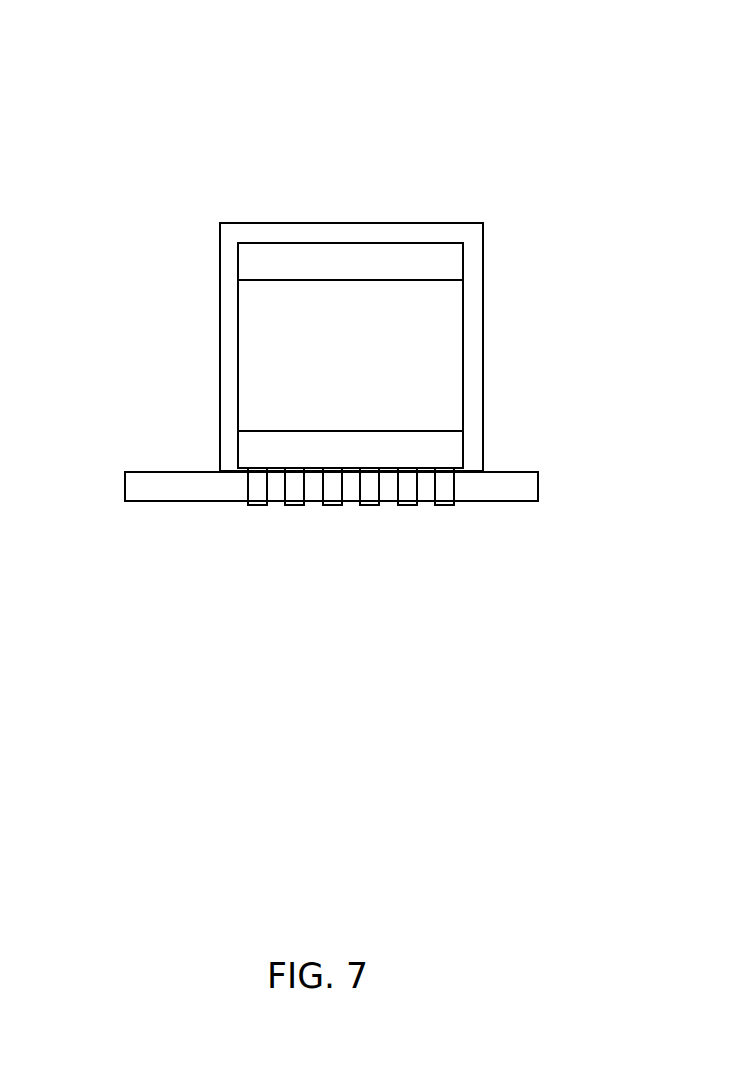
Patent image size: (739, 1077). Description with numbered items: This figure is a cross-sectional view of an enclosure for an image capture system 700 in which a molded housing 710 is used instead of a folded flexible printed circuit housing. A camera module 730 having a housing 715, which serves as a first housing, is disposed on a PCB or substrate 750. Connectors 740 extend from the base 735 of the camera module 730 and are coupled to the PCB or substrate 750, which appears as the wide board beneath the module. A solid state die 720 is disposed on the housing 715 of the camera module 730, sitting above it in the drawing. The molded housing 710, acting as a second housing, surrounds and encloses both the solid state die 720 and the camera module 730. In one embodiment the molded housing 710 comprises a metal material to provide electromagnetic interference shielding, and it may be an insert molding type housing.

The image capture system 700 is at (173, 73).
The molded housing 710 is at (295, 223).
The housing 715 is at (440, 280).
The solid state die 720 is at (372, 270).
The camera module 730 is at (372, 386).
The base 735 is at (445, 438).
The connectors 740 is at (447, 485).
The PCB or substrate 750 is at (135, 492).